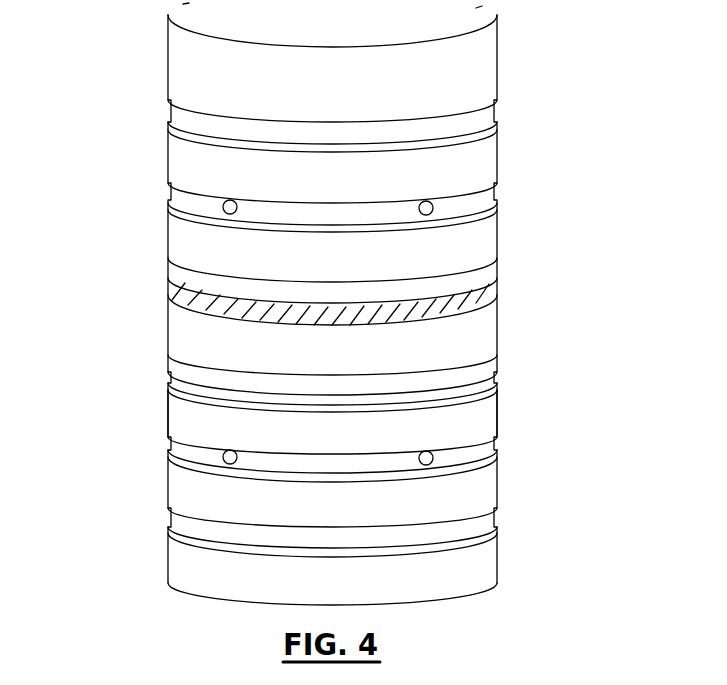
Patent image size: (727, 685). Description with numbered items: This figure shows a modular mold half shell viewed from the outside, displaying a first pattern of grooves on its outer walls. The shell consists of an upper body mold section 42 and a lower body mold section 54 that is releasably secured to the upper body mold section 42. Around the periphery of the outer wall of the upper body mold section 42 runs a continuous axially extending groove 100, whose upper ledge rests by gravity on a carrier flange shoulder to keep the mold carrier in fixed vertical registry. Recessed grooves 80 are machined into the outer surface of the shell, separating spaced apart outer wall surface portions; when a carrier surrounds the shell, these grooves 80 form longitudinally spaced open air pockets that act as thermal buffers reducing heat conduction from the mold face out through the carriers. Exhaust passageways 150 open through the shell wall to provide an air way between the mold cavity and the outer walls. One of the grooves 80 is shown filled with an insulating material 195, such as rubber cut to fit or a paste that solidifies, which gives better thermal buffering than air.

The upper body mold section 42 is at (497, 76).
The continuous axially extending groove 100 is at (168, 104).
The recessed grooves 80 is at (182, 194).
The exhaust passageways 150 is at (430, 212).
The insulating material 195 is at (490, 295).
The lower body mold section 54 is at (498, 405).